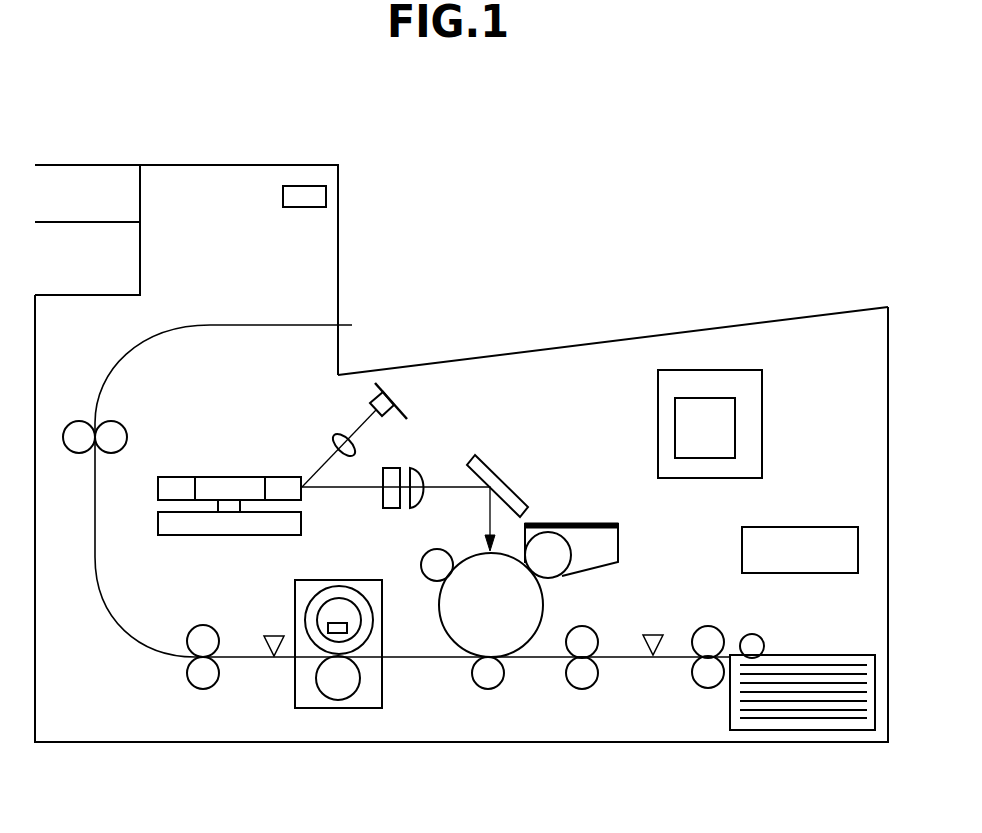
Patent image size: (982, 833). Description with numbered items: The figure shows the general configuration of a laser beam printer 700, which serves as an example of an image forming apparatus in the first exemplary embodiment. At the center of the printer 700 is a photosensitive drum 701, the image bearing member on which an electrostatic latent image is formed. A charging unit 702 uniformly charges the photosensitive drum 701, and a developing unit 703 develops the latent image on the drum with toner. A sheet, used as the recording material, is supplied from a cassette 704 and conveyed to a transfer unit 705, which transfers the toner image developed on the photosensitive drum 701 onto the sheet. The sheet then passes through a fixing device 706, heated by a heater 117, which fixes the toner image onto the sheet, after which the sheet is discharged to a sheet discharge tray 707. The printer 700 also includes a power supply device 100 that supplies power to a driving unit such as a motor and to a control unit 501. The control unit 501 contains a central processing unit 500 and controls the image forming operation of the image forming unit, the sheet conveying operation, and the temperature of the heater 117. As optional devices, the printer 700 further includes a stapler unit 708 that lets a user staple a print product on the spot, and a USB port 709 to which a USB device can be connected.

The power supply device 100 is at (803, 527).
The heater 117 is at (328, 628).
The central processing unit (CPU) 500 is at (675, 430).
The control unit 501 is at (762, 413).
The laser beam printer 700 is at (517, 742).
The photosensitive drum 701 is at (545, 598).
The charging unit 702 is at (420, 562).
The developing unit 703 is at (620, 540).
The cassette 704 is at (805, 655).
The transfer unit 705 is at (472, 682).
The fixing device 706 is at (295, 695).
The sheet discharge tray 707 is at (482, 350).
The stapler unit 708 is at (85, 165).
The USB port 709 is at (303, 186).